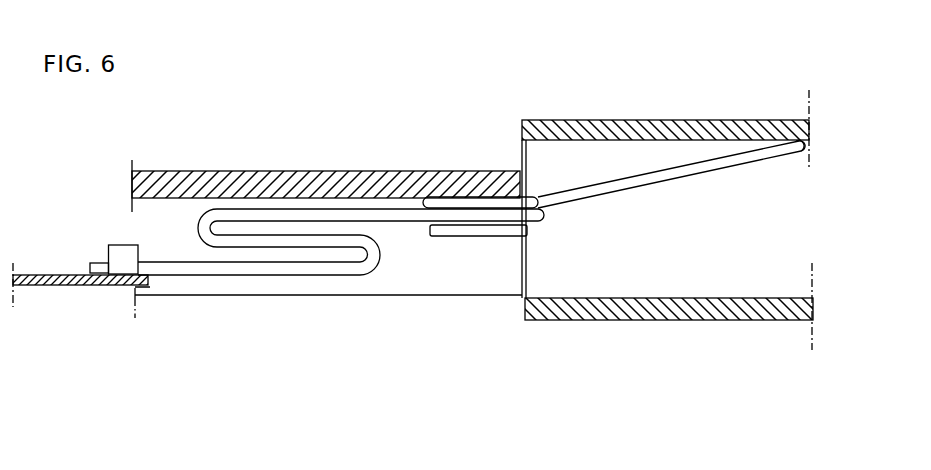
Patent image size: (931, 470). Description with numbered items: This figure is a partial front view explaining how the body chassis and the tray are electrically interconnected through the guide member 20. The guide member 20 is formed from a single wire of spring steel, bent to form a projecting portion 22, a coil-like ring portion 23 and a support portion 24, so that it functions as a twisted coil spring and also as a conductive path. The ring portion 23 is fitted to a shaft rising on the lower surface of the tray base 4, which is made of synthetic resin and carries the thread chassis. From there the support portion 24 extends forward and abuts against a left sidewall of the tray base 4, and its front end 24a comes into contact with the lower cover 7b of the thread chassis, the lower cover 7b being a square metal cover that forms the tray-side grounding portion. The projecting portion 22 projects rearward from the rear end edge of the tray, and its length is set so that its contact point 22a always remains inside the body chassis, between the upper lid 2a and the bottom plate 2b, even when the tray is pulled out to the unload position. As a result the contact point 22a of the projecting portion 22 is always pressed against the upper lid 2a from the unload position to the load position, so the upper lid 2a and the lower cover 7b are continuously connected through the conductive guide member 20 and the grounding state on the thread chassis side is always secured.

The tray base 4 is at (280, 172).
The guide member 20 is at (621, 159).
The upper lid 2a is at (767, 119).
The bottom plate 2b is at (748, 322).
The projecting portion 22 is at (698, 173).
The contact point 22a is at (789, 156).
The ring portion 23 is at (468, 228).
The support portion 24 is at (253, 268).
The front end 24a is at (97, 263).
The lower cover 7b is at (56, 287).